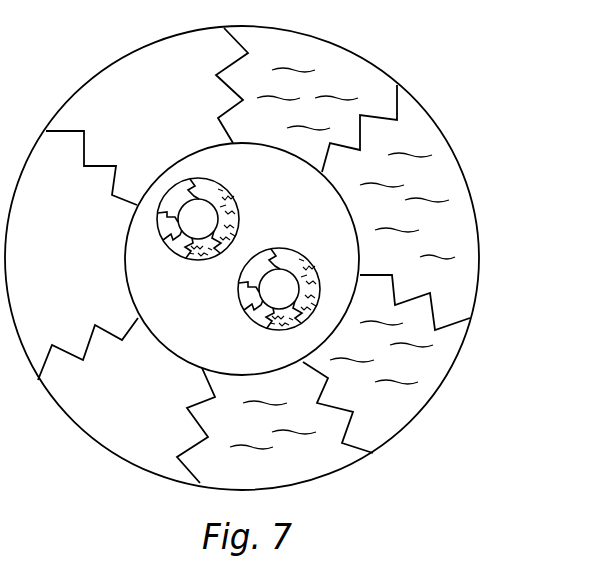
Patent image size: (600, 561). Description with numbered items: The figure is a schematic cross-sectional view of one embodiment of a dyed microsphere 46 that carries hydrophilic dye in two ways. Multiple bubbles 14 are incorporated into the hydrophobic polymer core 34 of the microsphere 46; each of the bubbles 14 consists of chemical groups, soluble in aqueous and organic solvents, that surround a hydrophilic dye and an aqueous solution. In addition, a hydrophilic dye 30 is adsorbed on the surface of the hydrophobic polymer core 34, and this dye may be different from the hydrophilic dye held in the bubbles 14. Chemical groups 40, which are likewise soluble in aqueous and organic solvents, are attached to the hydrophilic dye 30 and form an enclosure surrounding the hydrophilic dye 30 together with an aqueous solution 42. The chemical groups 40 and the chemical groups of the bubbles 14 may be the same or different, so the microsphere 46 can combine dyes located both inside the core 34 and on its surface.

The bubbles 14 is at (230, 180).
The hydrophilic dye 30 is at (410, 98).
The polymer core 34 is at (218, 323).
The chemical groups 40 is at (445, 378).
The aqueous solution 42 is at (453, 258).
The dyed microsphere 46 is at (500, 148).